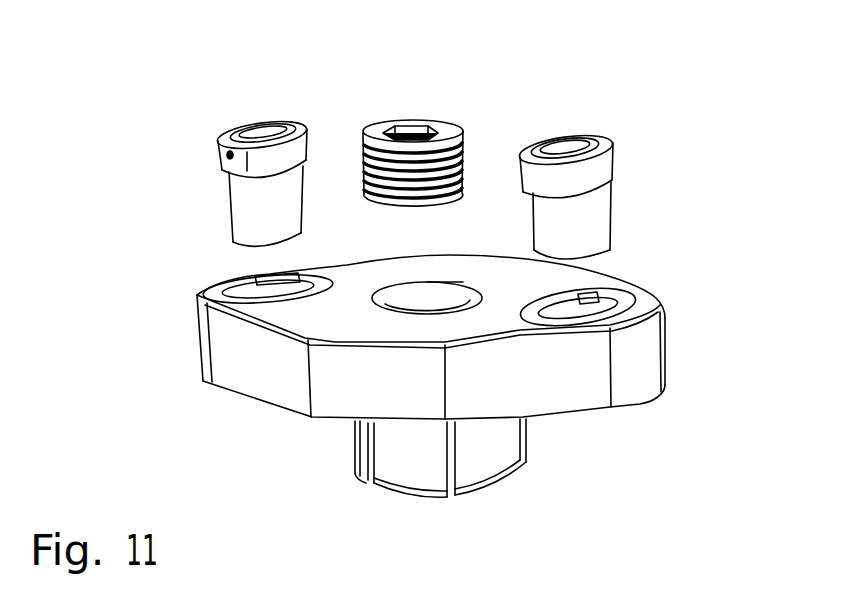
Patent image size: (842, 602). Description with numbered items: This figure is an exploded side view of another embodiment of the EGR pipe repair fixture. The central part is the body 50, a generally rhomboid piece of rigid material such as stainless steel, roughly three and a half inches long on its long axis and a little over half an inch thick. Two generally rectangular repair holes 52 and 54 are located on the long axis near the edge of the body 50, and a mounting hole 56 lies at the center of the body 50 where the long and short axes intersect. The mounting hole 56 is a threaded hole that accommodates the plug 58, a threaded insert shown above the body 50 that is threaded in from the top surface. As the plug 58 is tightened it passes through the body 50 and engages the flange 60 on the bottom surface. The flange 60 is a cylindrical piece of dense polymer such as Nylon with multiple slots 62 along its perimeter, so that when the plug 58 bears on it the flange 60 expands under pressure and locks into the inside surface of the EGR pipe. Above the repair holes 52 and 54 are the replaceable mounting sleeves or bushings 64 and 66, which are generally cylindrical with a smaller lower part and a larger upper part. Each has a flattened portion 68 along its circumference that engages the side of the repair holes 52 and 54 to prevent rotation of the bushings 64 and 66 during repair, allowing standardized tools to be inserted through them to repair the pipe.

The body 50 is at (640, 366).
The repair hole 52 is at (270, 296).
The repair hole 54 is at (582, 306).
The mounting hole 56 is at (438, 295).
The plug 58 is at (362, 148).
The flange 60 is at (487, 438).
The slots 62 is at (370, 490).
The bushing 64 is at (262, 214).
The bushing 66 is at (585, 230).
The flattened portion 68 is at (220, 154).